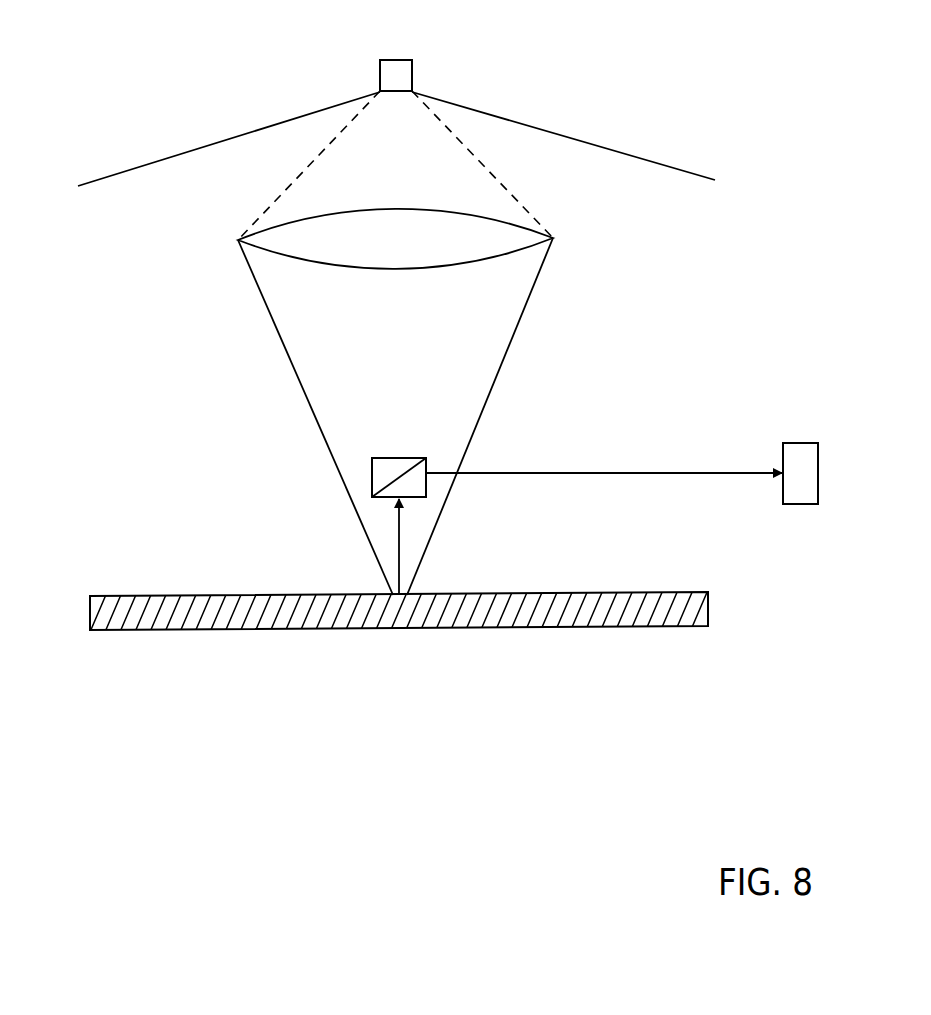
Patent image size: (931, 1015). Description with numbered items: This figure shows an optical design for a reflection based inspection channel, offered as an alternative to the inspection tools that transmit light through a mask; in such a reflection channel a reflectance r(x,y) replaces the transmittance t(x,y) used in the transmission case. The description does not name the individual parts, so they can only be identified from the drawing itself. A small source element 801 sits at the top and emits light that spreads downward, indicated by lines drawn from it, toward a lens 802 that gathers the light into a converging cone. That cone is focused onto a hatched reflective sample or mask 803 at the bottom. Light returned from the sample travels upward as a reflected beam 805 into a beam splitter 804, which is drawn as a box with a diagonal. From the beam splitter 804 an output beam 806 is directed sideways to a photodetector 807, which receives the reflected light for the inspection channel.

The light source 801 is at (398, 67).
The lens 802 is at (413, 248).
The substrate / sample plate 803 is at (97, 602).
The beam splitter 804 is at (398, 450).
The reflected beam 805 is at (402, 542).
The beam to photodetector 806 is at (593, 472).
The photodetector 807 is at (797, 450).